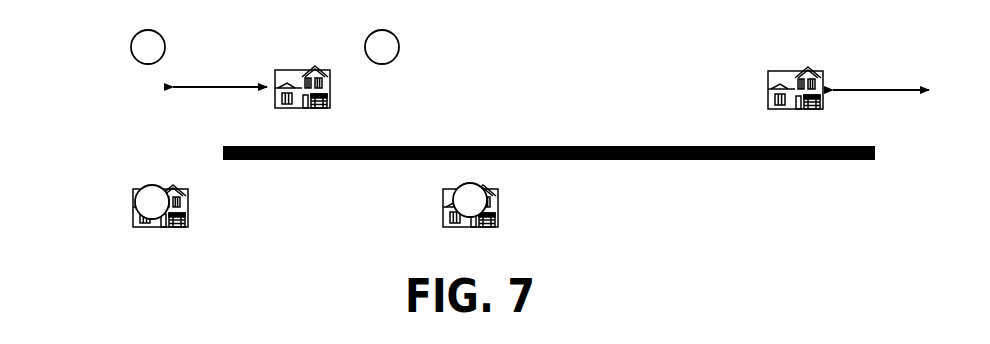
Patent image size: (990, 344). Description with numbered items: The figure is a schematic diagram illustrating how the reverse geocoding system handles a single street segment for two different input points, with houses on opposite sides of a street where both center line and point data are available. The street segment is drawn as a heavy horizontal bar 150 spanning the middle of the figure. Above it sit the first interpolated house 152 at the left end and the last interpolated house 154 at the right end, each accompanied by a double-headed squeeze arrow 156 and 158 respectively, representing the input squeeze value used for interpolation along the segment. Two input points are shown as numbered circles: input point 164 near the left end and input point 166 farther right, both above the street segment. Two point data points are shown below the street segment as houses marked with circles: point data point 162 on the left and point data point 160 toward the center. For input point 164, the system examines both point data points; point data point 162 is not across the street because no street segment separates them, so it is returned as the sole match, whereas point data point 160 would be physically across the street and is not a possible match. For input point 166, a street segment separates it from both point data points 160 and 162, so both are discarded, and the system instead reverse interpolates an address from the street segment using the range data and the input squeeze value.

The interpolation timeline bar 150 is at (585, 146).
The first interpolated house image 152 is at (291, 61).
The last interpolated house image 154 is at (787, 68).
The squeeze gesture indicator (first house) 156 is at (248, 61).
The squeeze gesture indicator (last house) 158 is at (870, 66).
The point data point 160 is at (497, 207).
The point data point 162 is at (188, 206).
The input point 164 is at (152, 66).
The input point 166 is at (388, 66).